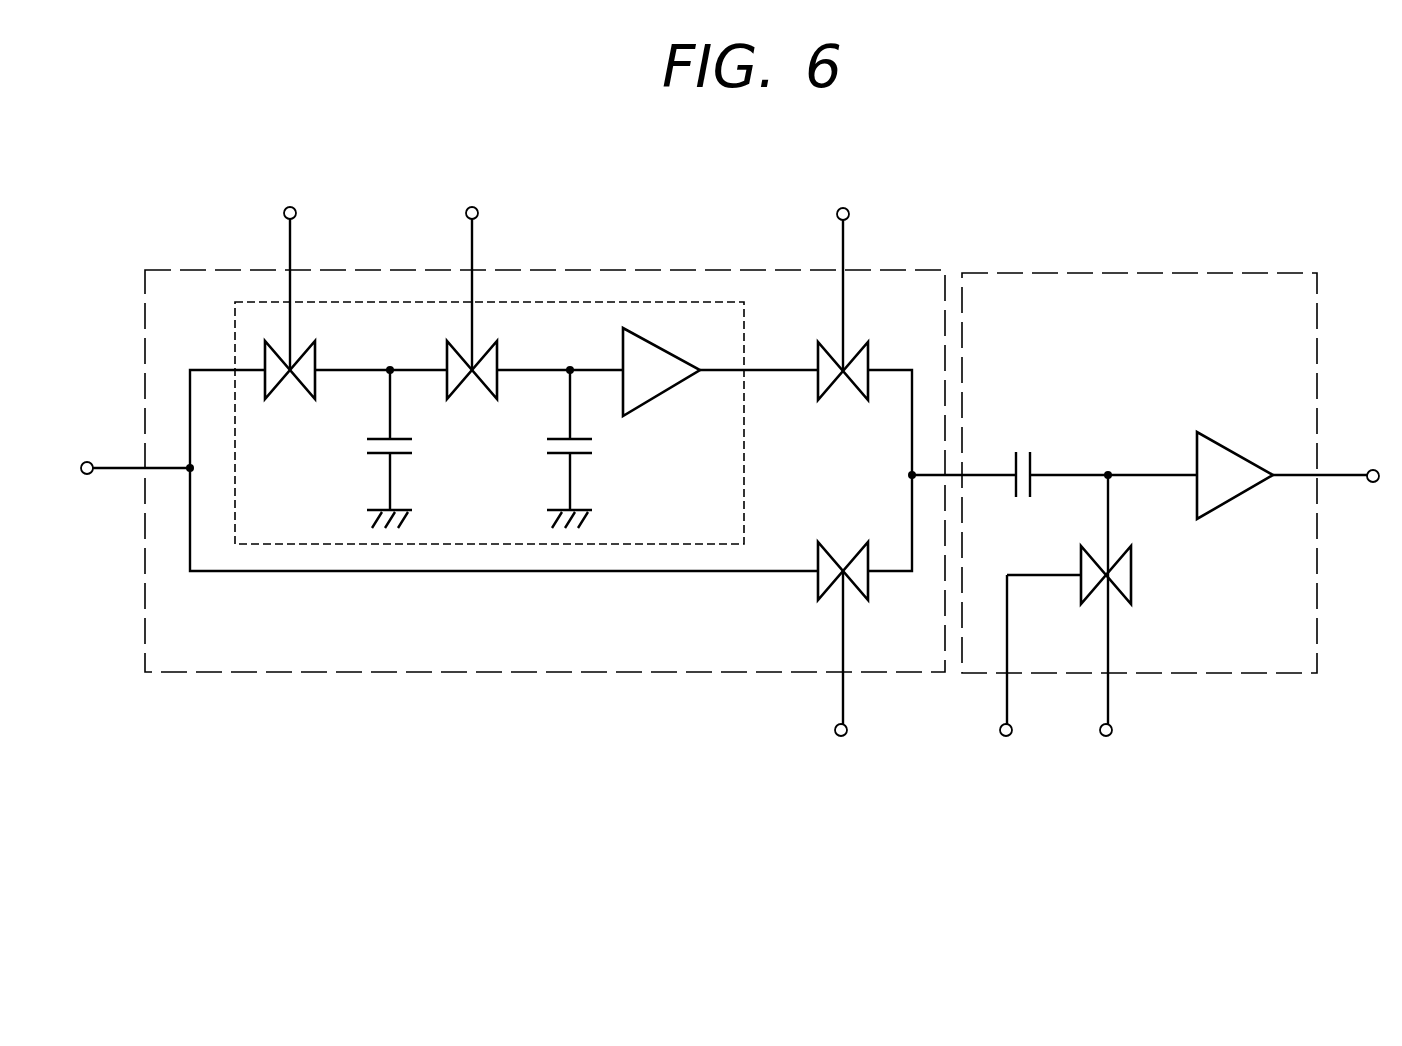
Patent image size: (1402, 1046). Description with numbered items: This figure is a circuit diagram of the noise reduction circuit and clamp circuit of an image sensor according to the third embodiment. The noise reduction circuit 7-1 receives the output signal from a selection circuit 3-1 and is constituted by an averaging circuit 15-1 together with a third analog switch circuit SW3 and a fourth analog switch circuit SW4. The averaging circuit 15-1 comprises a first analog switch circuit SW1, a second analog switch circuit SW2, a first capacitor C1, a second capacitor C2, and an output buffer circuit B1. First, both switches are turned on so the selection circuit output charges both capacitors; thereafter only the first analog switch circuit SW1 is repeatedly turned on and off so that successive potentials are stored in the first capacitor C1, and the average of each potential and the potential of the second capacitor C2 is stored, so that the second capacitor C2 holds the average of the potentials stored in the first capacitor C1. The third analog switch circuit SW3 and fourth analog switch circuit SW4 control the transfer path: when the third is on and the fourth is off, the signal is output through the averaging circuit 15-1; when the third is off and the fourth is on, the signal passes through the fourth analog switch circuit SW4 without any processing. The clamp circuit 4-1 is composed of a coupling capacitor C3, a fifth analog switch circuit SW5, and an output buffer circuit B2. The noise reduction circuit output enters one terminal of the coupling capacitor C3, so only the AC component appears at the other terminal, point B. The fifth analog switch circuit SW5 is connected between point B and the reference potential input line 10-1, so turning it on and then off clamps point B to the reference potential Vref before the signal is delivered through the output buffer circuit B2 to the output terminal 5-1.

The selection circuit 3-1 is at (89, 460).
The output terminal 5-1 is at (1375, 466).
The noise reduction circuit 7-1 is at (705, 270).
The averaging circuit 15-1 is at (746, 331).
The clamp circuit 4-1 is at (1247, 272).
The reference potential input line 10-1 is at (1104, 738).
The first analog switch circuit SW1 is at (298, 402).
The second analog switch circuit SW2 is at (478, 402).
The third analog switch circuit SW3 is at (848, 403).
The fourth analog switch circuit SW4 is at (847, 540).
The fifth analog switch circuit SW5 is at (1132, 580).
The first capacitor C1 is at (402, 456).
The second capacitor C2 is at (582, 456).
The coupling capacitor C3 is at (1024, 449).
The output buffer circuit B1 is at (661, 372).
The output buffer circuit B2 is at (1235, 475).